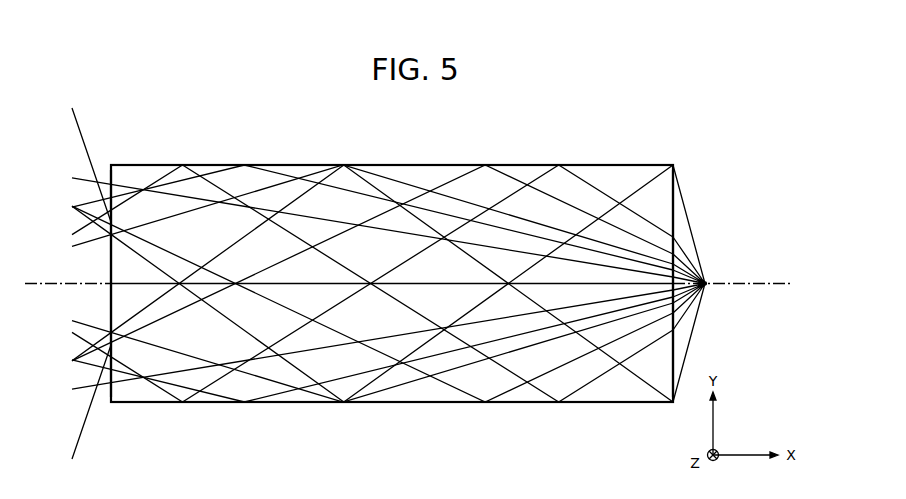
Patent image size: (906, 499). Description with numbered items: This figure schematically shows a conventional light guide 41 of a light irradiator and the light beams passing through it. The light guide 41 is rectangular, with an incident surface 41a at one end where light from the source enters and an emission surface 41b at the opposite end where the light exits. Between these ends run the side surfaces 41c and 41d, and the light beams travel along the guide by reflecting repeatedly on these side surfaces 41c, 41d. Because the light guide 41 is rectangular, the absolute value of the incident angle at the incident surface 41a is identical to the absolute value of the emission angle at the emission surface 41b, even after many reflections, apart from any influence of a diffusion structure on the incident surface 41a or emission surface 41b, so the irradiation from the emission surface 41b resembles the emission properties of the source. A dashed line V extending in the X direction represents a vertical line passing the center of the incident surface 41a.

The light guide 41 is at (702, 162).
The incident surface 41a is at (676, 339).
The emission surface 41b is at (111, 398).
The side surface 41c is at (410, 163).
The side surface 41d is at (404, 404).
The dashed line V is at (58, 281).